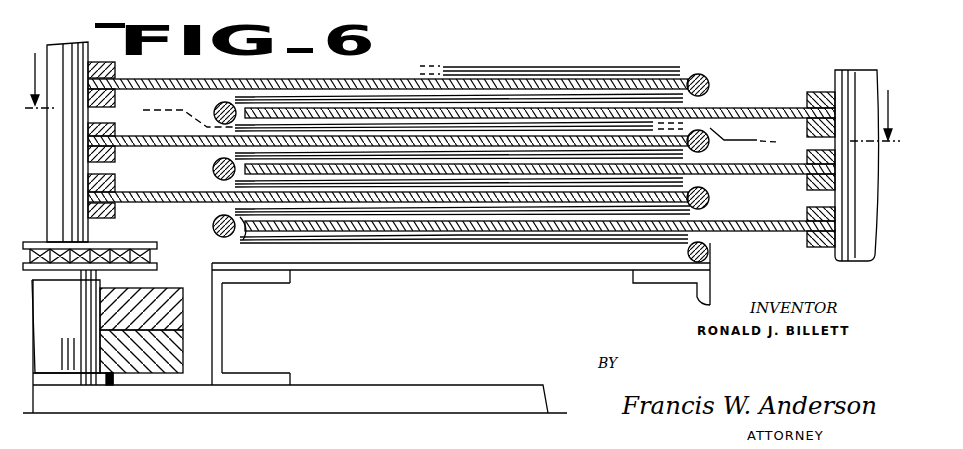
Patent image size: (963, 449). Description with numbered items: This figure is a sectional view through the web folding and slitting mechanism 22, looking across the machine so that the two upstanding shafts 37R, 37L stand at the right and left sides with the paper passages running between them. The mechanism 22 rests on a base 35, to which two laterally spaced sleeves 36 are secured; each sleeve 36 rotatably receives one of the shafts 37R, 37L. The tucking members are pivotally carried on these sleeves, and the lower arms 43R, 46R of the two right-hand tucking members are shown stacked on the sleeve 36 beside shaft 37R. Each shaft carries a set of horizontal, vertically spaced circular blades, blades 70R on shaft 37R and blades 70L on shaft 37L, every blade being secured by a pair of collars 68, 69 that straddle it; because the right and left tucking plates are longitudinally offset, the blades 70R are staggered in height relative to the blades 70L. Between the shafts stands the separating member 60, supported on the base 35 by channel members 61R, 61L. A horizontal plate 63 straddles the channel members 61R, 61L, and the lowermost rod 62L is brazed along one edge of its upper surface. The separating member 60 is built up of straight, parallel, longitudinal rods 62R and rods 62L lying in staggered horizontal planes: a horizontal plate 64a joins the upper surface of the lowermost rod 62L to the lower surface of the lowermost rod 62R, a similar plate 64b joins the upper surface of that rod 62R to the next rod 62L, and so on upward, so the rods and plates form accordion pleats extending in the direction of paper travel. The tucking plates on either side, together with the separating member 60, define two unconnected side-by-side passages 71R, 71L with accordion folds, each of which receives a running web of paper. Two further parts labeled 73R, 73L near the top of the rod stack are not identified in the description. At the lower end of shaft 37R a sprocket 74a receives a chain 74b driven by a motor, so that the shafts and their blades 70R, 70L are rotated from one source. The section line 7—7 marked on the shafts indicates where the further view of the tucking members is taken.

The upstanding shaft 37R is at (79, 22).
The upstanding shaft 37L is at (865, 73).
The section line 7— 7 is at (462, 110).
The collar 68 is at (112, 72).
The collar 69 is at (113, 98).
The passage 71R is at (678, 80).
The passage 71L is at (244, 163).
The right sleeve 73R is at (448, 70).
The left sleeve 73L is at (516, 64).
The circular blade 70R is at (397, 80).
The circular blade 70L is at (797, 165).
The horizontal plate 64a is at (430, 243).
The horizontal plate 64b is at (356, 258).
The separating member 60 is at (710, 71).
The rod 62L is at (711, 89).
The rod 62R is at (217, 103).
The web folding and slitting mechanism 22 is at (692, 45).
The chain 74b is at (158, 246).
The sprocket 74a is at (74, 279).
The lower arm 43R is at (110, 313).
The lower arm 46R is at (173, 351).
The sleeve 36 is at (53, 362).
The base 35 is at (388, 392).
The channel member 61R is at (221, 321).
The horizontal plate 63 is at (534, 270).
The channel member 61L is at (700, 296).